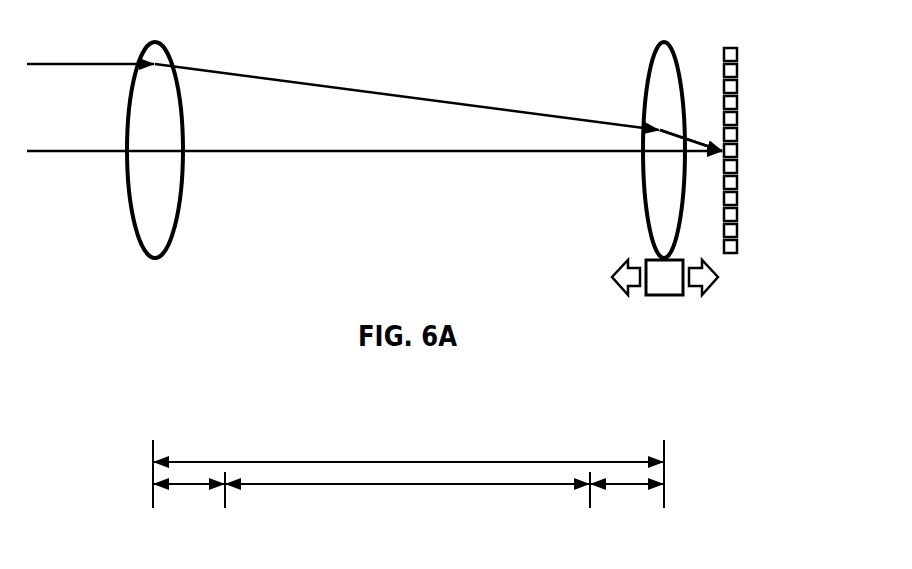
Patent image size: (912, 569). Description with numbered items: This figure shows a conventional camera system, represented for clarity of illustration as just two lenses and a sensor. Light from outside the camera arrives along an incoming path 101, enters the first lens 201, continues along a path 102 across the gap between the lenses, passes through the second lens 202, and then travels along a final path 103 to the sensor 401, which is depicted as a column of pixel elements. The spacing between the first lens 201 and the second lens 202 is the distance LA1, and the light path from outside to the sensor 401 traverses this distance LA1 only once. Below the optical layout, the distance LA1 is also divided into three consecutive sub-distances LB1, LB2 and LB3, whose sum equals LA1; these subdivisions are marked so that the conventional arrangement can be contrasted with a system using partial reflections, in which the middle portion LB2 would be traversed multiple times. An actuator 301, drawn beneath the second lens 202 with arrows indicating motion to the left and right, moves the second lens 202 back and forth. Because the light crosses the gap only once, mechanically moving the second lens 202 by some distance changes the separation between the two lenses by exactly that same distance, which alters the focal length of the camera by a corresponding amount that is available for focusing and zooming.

The light path segment 101 is at (105, 63).
The light path segment 102 is at (385, 94).
The light path segment 103 is at (694, 137).
The first lens 201 is at (183, 192).
The second lens 202 is at (646, 68).
The actuator 301 is at (663, 295).
The sensor 401 is at (739, 85).
The distance between the two lenses LA1 is at (408, 446).
The first sub-distance LB1 is at (189, 507).
The second sub-distance LB2 is at (407, 507).
The third sub-distance LB3 is at (627, 507).